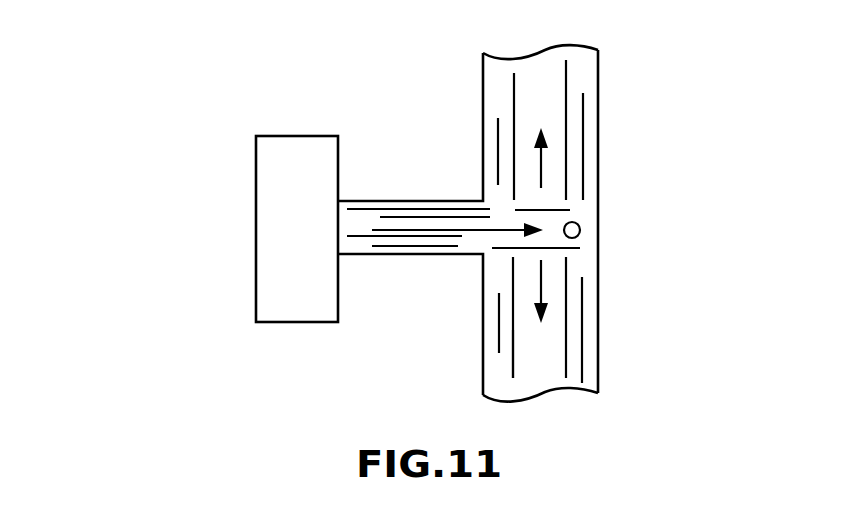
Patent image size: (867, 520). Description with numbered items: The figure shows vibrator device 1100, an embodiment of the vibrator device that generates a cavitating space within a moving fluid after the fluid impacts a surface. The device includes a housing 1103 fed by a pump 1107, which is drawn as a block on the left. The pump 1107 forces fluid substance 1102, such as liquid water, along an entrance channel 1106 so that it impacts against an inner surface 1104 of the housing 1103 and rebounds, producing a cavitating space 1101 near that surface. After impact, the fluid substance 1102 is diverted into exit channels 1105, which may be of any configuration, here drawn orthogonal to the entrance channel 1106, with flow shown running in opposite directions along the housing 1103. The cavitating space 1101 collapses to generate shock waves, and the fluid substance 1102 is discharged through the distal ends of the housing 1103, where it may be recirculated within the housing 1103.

The vibrator device 1100 is at (138, 92).
The cavitating space 1101 is at (580, 228).
The fluid substance 1102 is at (508, 360).
The housing 1103 is at (482, 112).
The inner surface 1104 is at (603, 231).
The exit channels 1105 is at (602, 157).
The entrance channel 1106 is at (405, 201).
The pump 1107 is at (294, 135).